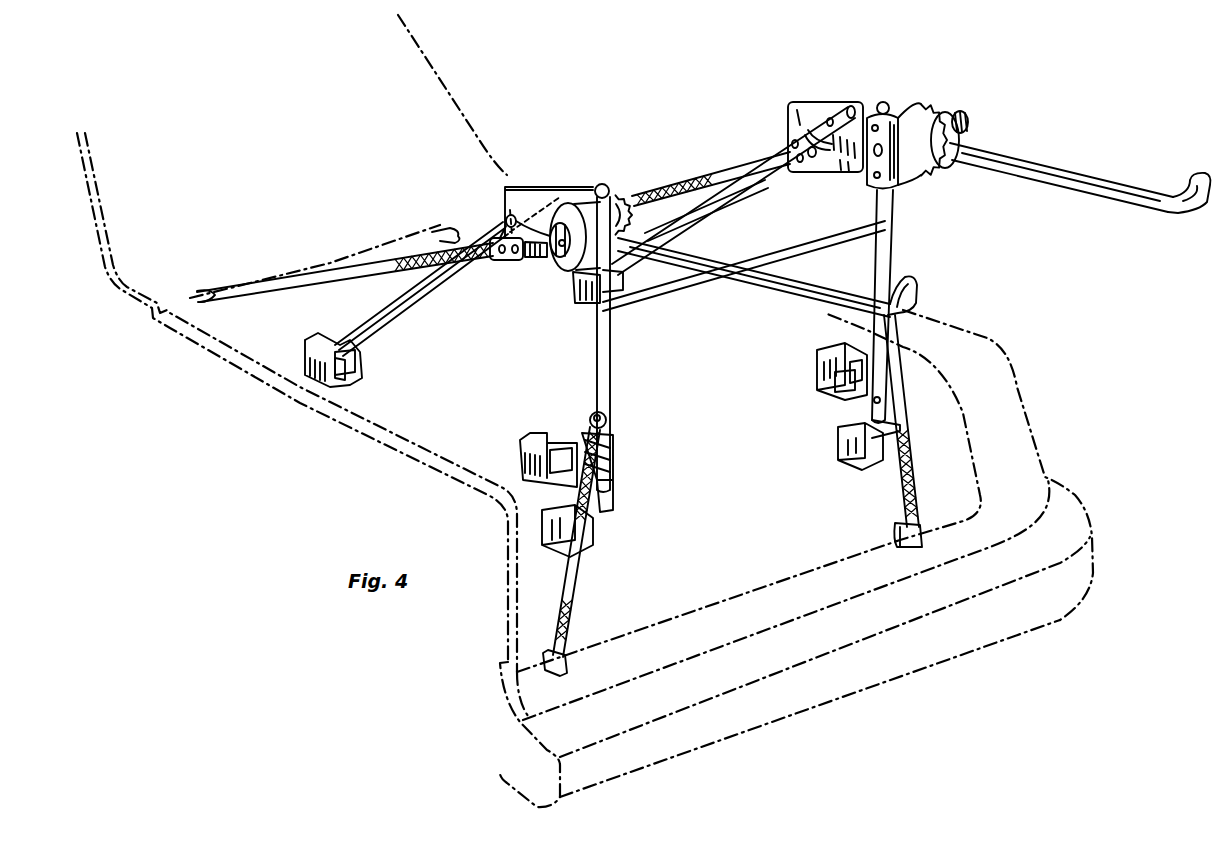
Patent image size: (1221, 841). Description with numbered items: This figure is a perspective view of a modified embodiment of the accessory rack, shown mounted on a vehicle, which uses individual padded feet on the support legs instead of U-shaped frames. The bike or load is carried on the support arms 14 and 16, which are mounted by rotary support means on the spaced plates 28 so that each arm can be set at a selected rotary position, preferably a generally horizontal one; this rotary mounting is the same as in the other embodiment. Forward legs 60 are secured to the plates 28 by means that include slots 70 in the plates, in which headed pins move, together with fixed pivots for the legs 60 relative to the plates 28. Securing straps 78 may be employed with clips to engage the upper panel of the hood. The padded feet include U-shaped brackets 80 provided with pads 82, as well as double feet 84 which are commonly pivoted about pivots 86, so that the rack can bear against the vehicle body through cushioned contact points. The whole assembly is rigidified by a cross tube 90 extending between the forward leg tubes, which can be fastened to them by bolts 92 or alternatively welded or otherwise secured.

The support arm 14 is at (1083, 176).
The support arm 16 is at (833, 290).
The spaced plates 28 is at (530, 187).
The forward legs 60 is at (413, 290).
The slots 70 is at (535, 255).
The securing straps 78 is at (364, 265).
The U-shaped brackets 80 is at (357, 363).
The pads 82 is at (347, 387).
The double feet 84 is at (569, 406).
The pivots 86 is at (613, 477).
The cross tube 90 is at (795, 247).
The bolts 92 is at (590, 316).